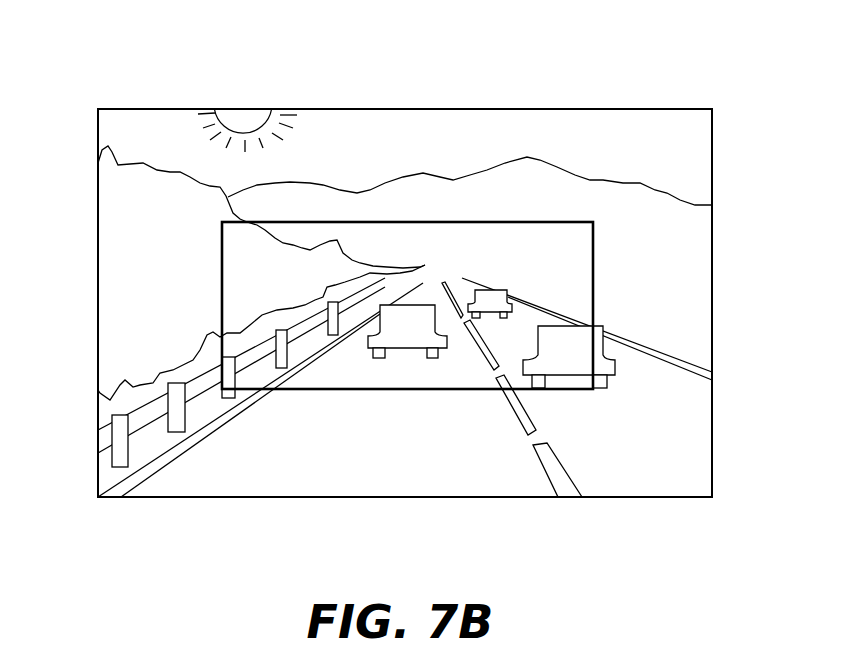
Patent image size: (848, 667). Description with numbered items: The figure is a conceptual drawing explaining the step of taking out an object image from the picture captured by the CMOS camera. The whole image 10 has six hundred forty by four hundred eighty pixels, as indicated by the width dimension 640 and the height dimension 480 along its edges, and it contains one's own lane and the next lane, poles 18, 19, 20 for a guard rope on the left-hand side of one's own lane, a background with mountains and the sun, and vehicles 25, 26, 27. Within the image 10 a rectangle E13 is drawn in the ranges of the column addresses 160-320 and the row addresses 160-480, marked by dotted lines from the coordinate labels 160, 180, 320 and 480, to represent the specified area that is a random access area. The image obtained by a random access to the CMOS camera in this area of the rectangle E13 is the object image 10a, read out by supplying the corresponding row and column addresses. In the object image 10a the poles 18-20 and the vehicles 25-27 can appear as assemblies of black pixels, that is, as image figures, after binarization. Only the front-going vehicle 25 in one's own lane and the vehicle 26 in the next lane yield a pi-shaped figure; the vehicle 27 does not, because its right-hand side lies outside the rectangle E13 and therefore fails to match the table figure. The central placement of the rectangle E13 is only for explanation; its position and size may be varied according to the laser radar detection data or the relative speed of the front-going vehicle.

The image 10 is at (618, 109).
The object image 10a is at (533, 290).
The rectangle E13 is at (384, 222).
The pole 18 is at (229, 399).
The pole 19 is at (281, 368).
The pole 20 is at (336, 335).
The front-going vehicle 25 is at (405, 348).
The vehicle 26 is at (495, 290).
The vehicle 27 is at (570, 389).
The address 160 is at (222, 222).
The address 480 is at (725, 503).
The window top pixel coordinate 180 is at (222, 223).
The address 320 is at (222, 389).
The pixel count 640 is at (98, 505).